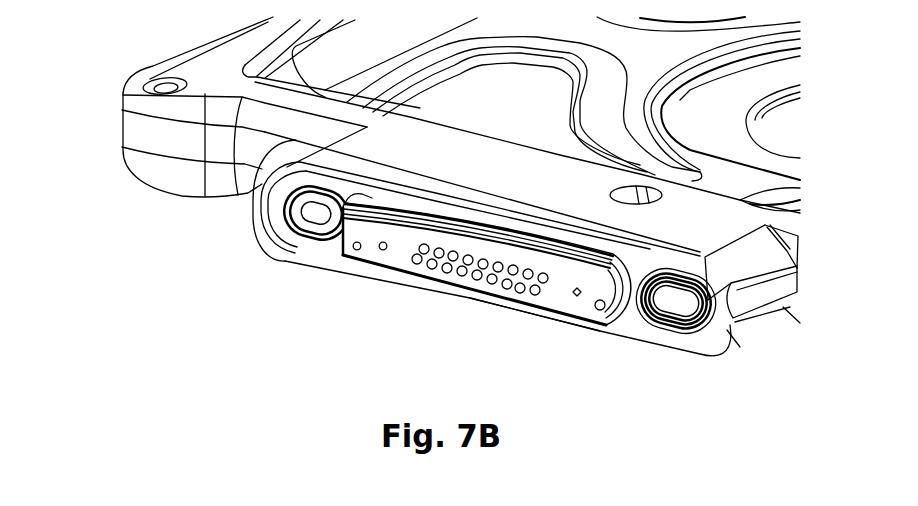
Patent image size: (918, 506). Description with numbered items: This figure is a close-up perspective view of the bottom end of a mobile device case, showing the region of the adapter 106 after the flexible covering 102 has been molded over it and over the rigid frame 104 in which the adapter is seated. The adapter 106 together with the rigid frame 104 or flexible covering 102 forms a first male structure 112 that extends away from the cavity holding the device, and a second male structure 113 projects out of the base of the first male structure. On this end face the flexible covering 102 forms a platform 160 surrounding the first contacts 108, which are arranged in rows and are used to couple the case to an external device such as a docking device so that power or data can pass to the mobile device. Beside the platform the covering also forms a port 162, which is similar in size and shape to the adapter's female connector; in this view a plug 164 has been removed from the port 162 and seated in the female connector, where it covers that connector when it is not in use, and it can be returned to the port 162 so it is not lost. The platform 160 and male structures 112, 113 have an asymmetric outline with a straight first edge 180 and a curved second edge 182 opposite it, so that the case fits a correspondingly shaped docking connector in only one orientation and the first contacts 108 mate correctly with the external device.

The flexible covering 102 is at (188, 182).
The rigid frame 104 is at (403, 70).
The adapter 106 is at (723, 330).
The first contacts 108 is at (420, 262).
The first male structure 112 is at (645, 323).
The second male structure 113 is at (550, 297).
The platform 160 is at (400, 257).
The port 162 is at (317, 207).
The plug 164 is at (680, 318).
The first edge 180 is at (343, 247).
The second edge 182 is at (618, 318).